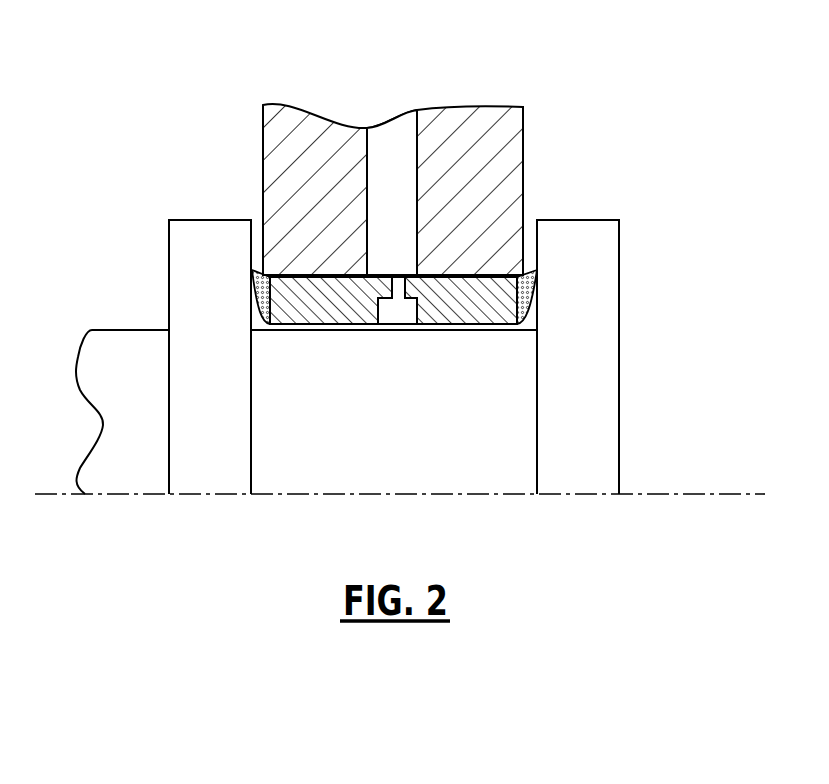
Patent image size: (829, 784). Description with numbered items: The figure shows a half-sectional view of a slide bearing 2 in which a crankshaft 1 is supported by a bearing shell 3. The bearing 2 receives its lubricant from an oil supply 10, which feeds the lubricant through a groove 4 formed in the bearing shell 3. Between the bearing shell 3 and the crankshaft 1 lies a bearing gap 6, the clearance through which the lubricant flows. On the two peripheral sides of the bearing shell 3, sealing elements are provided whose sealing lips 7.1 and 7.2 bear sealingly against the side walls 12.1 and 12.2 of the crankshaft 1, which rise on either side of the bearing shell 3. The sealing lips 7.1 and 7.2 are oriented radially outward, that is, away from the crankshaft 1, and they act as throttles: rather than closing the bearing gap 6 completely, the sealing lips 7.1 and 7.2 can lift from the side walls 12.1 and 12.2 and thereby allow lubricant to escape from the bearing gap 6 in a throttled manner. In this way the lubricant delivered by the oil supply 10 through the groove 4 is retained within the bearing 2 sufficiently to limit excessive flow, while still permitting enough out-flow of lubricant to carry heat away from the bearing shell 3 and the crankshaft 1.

The crankshaft 1 is at (412, 471).
The slide bearing 2 is at (472, 138).
The bearing shell 3 is at (365, 303).
The groove 4 is at (388, 318).
The bearing gap 6 is at (442, 325).
The sealing lip 7.1 is at (252, 290).
The sealing lip 7.2 is at (533, 308).
The oil supply 10 is at (392, 192).
The side wall 12.1 is at (185, 282).
The side wall 12.2 is at (595, 278).